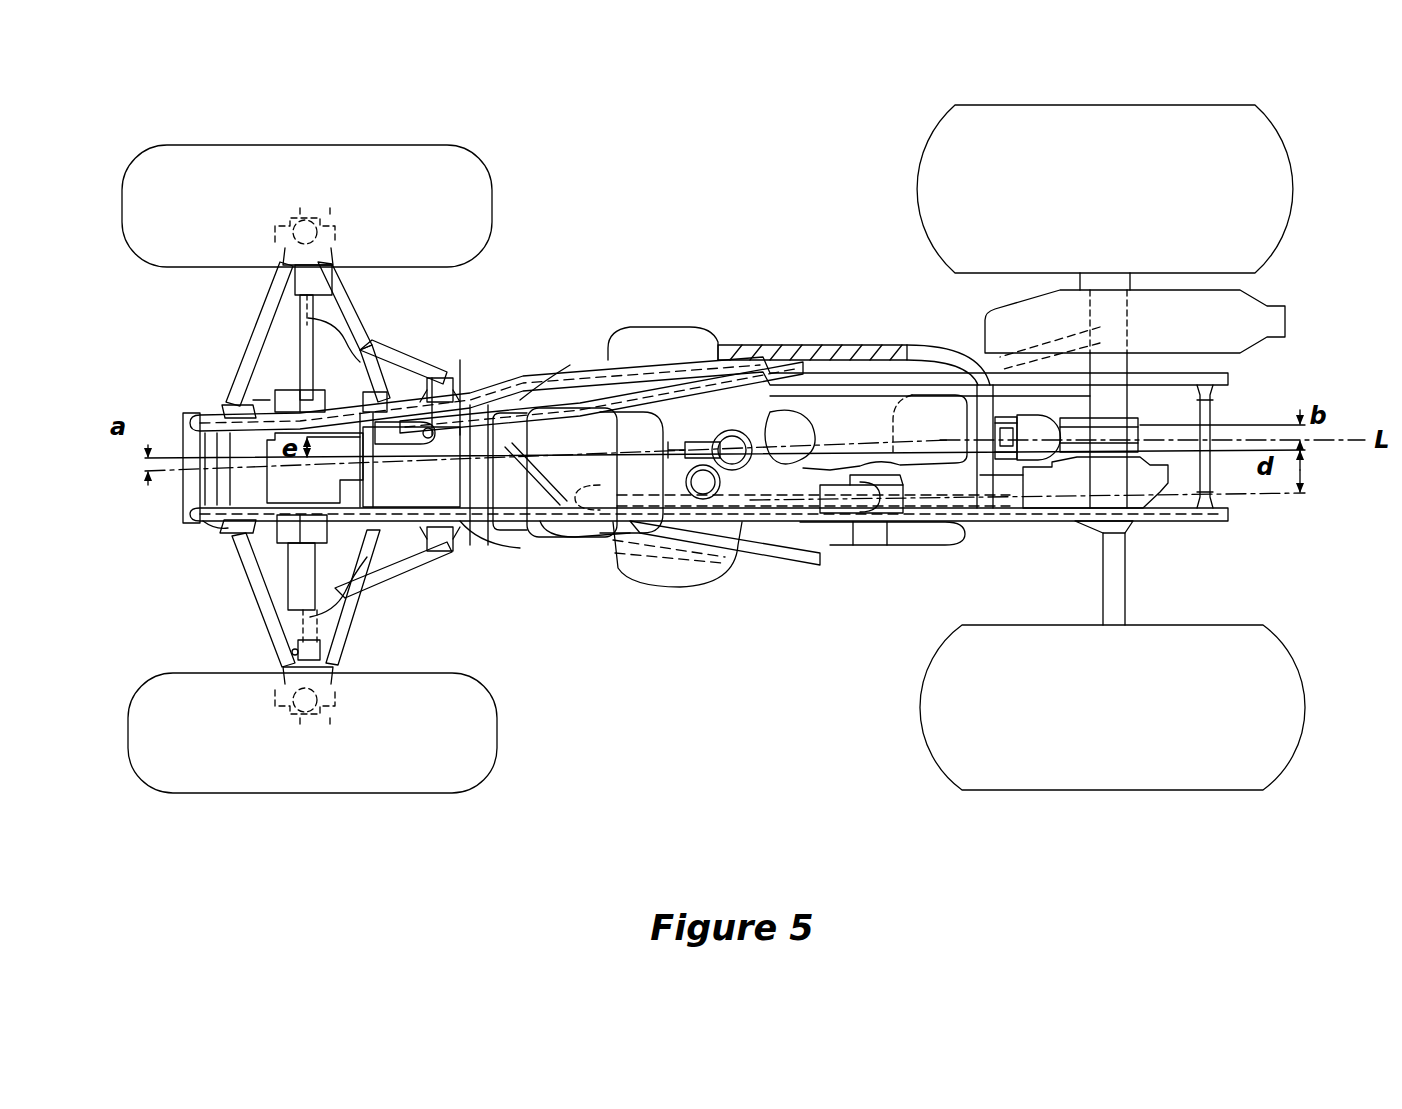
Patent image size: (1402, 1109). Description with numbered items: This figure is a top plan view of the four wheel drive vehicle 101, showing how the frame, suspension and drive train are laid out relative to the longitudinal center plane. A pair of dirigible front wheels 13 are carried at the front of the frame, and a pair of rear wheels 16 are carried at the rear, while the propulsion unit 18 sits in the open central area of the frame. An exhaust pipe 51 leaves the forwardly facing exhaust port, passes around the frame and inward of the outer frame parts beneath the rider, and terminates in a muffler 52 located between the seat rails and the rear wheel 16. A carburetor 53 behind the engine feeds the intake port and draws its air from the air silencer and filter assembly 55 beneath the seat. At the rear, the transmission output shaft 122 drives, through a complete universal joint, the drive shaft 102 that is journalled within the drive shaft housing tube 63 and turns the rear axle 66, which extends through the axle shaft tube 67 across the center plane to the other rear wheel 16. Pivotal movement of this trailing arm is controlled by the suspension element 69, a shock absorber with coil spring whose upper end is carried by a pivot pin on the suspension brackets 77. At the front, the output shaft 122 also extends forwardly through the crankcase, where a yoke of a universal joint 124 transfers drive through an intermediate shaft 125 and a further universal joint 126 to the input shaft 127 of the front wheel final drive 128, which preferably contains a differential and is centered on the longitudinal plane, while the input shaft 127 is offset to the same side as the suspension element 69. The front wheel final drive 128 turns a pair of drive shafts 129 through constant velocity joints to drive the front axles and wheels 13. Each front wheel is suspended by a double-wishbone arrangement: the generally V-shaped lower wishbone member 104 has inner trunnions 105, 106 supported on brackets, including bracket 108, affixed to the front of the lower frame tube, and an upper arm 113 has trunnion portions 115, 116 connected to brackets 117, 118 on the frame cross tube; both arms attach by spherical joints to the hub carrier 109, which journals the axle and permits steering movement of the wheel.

The front wheels 13 is at (487, 170).
The rear wheels 16 is at (1290, 150).
The propulsion unit 18 is at (575, 545).
The exhaust pipe 51 is at (560, 375).
The muffler 52 is at (1168, 305).
The carburetor 53 is at (700, 445).
The air silencer and filter assembly 55 is at (830, 400).
The drive shaft housing tube 63 is at (1150, 495).
The rear axle 66 is at (1126, 600).
The axle shaft tube 67 is at (1115, 400).
The suspension element 69 is at (1040, 430).
The suspension brackets 77 is at (1000, 355).
The four wheel drive vehicle 101 is at (708, 225).
The drive shaft 102 is at (953, 522).
The lower wishbone member 104 is at (263, 300).
The trunnion 105 is at (200, 420).
The trunnion 106 is at (525, 400).
The bracket 108 is at (468, 400).
The hub carrier 109 is at (335, 232).
The upper arm 113 is at (320, 308).
The trunnion portion 115 is at (300, 382).
The trunnion portion 116 is at (382, 385).
The bracket 117 is at (292, 402).
The bracket 118 is at (417, 378).
The transmission output shaft 122 is at (755, 520).
The universal joint 124 is at (595, 472).
The intermediate shaft 125 is at (520, 485).
The further universal joint 126 is at (485, 380).
The input shaft 127 is at (363, 460).
The front wheel final drive 128 is at (222, 535).
The drive shafts 129 is at (300, 375).